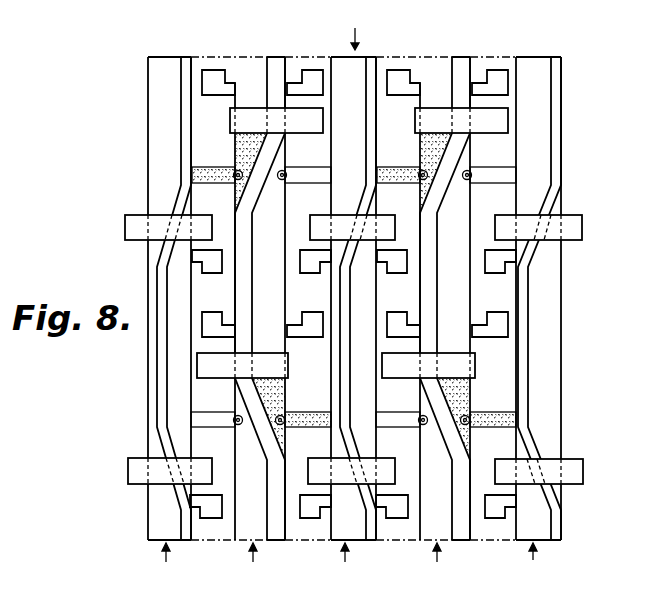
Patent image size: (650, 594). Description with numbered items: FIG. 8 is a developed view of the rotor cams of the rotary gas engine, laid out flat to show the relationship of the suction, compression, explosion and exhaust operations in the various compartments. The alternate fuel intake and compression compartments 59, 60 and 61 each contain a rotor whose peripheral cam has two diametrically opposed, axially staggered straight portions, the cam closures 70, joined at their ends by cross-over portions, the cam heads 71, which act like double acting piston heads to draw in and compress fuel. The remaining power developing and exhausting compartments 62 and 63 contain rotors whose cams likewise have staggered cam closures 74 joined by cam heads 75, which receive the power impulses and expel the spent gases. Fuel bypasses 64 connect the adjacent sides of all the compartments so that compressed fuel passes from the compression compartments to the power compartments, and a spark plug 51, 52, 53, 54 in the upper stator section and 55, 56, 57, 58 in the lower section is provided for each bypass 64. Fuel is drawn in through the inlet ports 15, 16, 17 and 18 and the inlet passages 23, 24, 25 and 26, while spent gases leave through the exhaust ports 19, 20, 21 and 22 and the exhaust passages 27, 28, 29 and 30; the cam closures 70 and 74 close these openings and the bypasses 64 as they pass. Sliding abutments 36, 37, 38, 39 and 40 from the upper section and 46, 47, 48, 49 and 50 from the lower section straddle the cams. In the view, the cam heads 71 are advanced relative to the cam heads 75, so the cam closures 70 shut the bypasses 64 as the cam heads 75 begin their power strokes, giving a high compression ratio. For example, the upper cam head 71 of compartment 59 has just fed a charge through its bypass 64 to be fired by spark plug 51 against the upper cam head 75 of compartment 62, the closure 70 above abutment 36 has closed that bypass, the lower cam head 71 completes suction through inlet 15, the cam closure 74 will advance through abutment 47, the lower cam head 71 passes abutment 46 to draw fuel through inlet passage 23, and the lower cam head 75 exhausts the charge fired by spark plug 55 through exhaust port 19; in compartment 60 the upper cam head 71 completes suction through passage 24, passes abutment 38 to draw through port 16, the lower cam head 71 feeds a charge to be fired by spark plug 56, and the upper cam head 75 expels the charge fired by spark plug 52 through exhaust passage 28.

The inlet port 15 is at (207, 269).
The inlet port 16 is at (300, 260).
The inlet port 17 is at (398, 252).
The inlet port 18 is at (485, 261).
The exhaust port 19 is at (215, 70).
The exhaust port 20 is at (306, 70).
The exhaust port 21 is at (400, 70).
The exhaust port 22 is at (492, 70).
The inlet passage 23 is at (216, 520).
The inlet passage 24 is at (315, 520).
The inlet passage 25 is at (400, 520).
The inlet passage 26 is at (498, 520).
The exhaust passage 27 is at (220, 313).
The exhaust passage 28 is at (315, 313).
The exhaust passage 29 is at (405, 313).
The exhaust passage 30 is at (500, 313).
The abutment 36 is at (135, 241).
The abutment 37 is at (230, 125).
The abutment 38 is at (322, 215).
The abutment 39 is at (415, 125).
The abutment 40 is at (493, 216).
The abutment 46 is at (129, 471).
The abutment 47 is at (201, 378).
The abutment 48 is at (325, 458).
The abutment 49 is at (392, 378).
The abutment 50 is at (585, 481).
The spark plug 51 is at (234, 171).
The spark plug 52 is at (287, 172).
The spark plug 53 is at (419, 171).
The spark plug 54 is at (472, 172).
The spark plug 55 is at (242, 428).
The spark plug 56 is at (286, 417).
The spark plug 57 is at (427, 428).
The spark plug 58 is at (470, 417).
The fuel intake and compression compartment 59 is at (170, 564).
The fuel intake and compression compartment 60 is at (348, 565).
The fuel intake and compression compartment 61 is at (538, 560).
The power developing and spent gas exhausting compartment 62 is at (256, 564).
The power developing and spent gas exhausting compartment 63 is at (437, 563).
The fuel bypass 64 is at (325, 177).
The cam closure 70 is at (182, 67).
The cam head 71 is at (171, 206).
The cam closure 74 is at (267, 70).
The cam head 75 is at (259, 197).